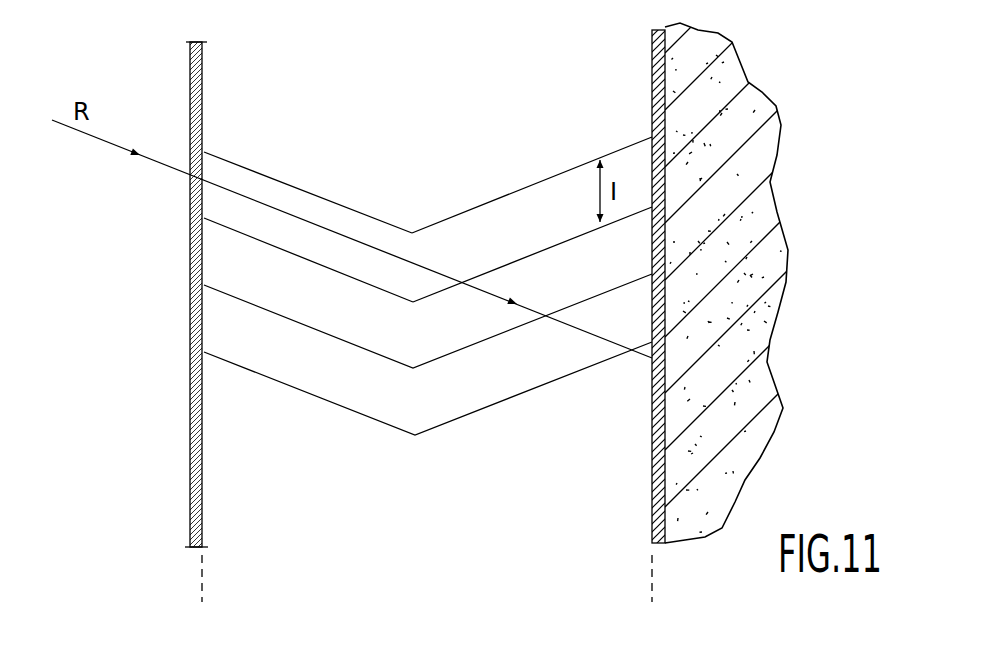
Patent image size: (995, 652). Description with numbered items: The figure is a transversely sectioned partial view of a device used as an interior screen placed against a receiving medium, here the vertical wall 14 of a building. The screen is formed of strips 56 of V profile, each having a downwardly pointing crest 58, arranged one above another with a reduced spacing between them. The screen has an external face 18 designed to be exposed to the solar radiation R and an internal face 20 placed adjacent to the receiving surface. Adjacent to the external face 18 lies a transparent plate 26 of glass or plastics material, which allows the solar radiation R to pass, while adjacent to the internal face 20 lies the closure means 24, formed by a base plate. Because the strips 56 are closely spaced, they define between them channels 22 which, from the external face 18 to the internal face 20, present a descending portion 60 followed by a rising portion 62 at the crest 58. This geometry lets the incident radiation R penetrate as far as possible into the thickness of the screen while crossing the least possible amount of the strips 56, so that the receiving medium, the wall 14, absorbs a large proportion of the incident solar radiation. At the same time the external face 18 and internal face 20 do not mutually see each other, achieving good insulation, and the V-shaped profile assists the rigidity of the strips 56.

The vertical wall 14 is at (738, 287).
The external face 18 is at (203, 583).
The internal face 20 is at (650, 583).
The channels 22 is at (380, 324).
The closure means 24 is at (652, 82).
The transparent plate 26 is at (196, 87).
The strips 56 is at (303, 250).
The crest 58 is at (413, 230).
The descending portion 60 is at (372, 263).
The rising portion 62 is at (518, 228).